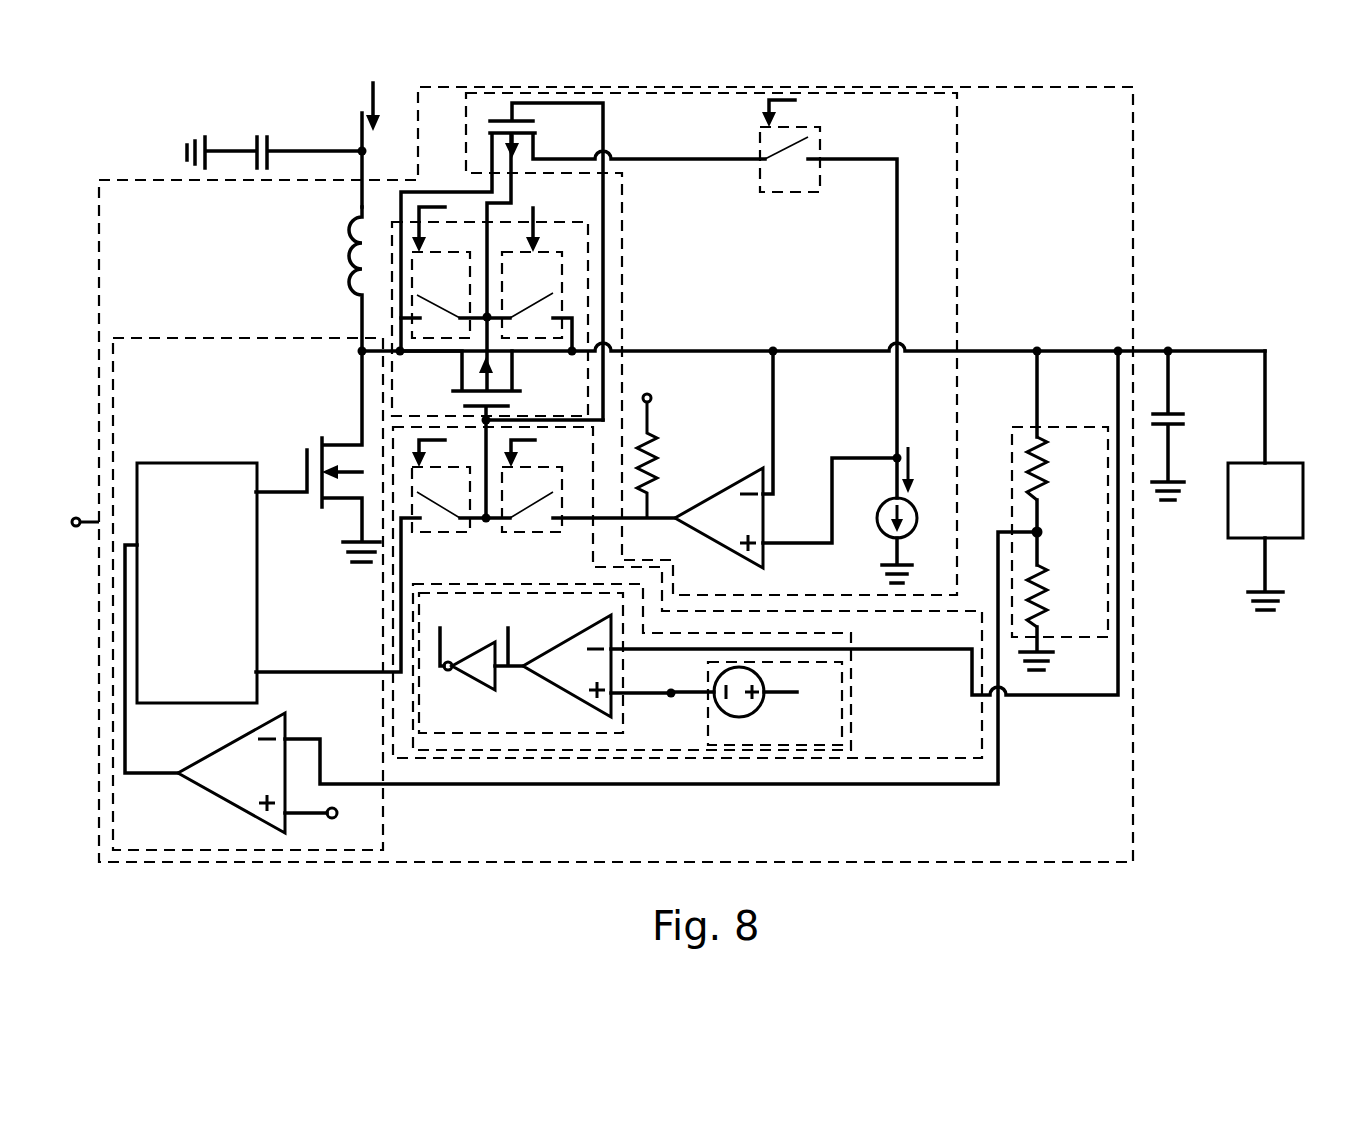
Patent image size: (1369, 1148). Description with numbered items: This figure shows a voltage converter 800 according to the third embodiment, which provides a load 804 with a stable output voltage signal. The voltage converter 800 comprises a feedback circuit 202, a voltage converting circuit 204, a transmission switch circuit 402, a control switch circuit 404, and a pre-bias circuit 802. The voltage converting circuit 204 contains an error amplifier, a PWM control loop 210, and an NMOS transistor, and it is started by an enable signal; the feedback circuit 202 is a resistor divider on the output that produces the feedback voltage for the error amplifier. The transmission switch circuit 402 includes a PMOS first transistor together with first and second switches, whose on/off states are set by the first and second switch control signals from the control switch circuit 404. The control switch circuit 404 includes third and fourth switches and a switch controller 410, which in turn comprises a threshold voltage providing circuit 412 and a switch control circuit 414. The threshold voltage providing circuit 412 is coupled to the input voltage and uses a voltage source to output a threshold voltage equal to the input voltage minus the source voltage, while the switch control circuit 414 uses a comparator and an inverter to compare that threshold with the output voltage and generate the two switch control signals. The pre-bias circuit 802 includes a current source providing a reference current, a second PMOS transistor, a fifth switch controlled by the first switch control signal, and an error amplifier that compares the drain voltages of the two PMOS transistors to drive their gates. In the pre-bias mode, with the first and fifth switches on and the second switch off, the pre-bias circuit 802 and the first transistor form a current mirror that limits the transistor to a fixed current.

The voltage converter 800 is at (1188, 160).
The pre-bias circuit 802 is at (957, 302).
The load 804 is at (1303, 500).
The feedback circuit 202 is at (1108, 580).
The voltage converting circuit 204 is at (385, 822).
The PWM control loop 210 is at (194, 463).
The transmission switch circuit 402 is at (588, 272).
The control switch circuit 404 is at (607, 758).
The switch controller 410 is at (568, 750).
The threshold voltage providing circuit 412 is at (740, 747).
The switch control circuit 414 is at (520, 737).